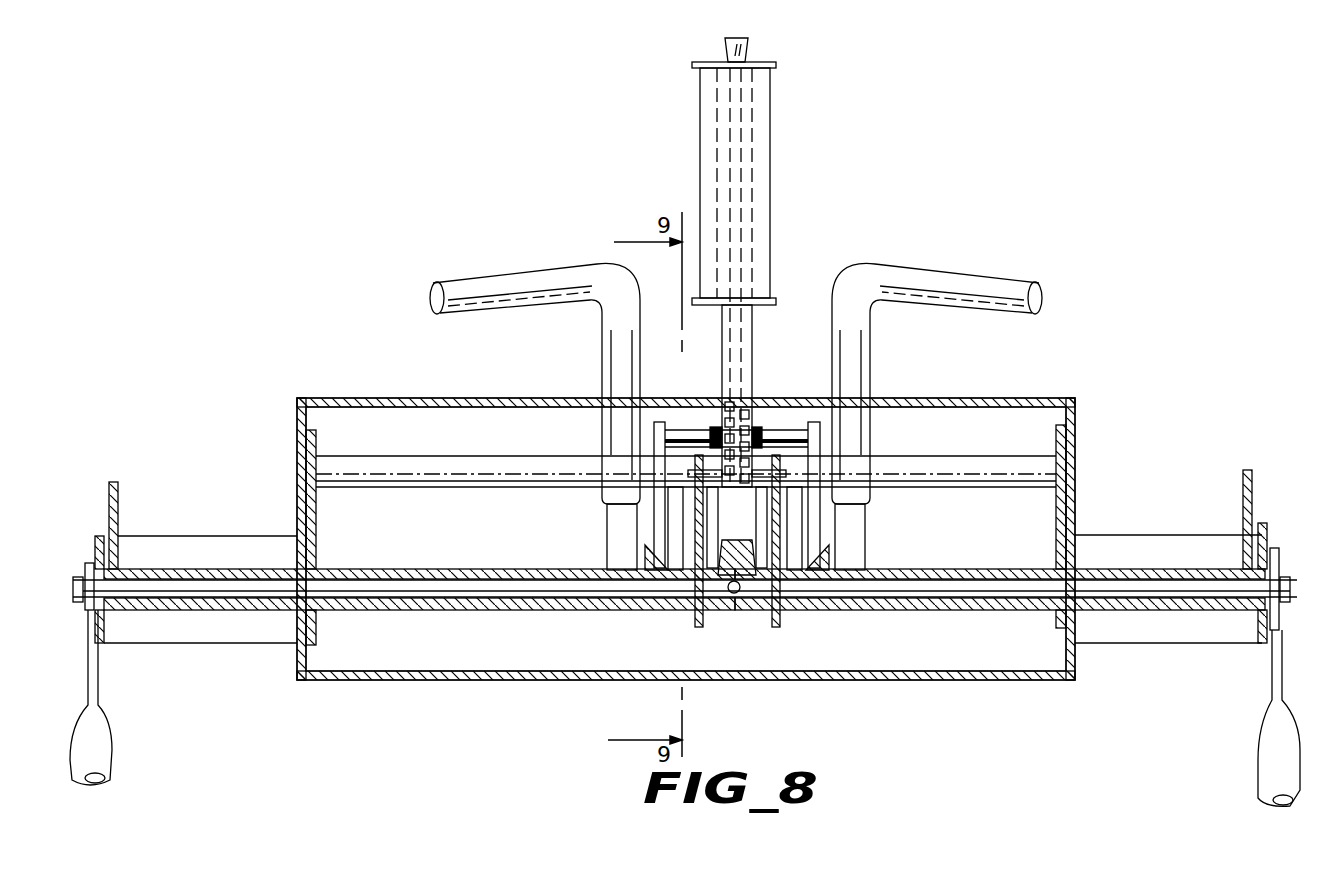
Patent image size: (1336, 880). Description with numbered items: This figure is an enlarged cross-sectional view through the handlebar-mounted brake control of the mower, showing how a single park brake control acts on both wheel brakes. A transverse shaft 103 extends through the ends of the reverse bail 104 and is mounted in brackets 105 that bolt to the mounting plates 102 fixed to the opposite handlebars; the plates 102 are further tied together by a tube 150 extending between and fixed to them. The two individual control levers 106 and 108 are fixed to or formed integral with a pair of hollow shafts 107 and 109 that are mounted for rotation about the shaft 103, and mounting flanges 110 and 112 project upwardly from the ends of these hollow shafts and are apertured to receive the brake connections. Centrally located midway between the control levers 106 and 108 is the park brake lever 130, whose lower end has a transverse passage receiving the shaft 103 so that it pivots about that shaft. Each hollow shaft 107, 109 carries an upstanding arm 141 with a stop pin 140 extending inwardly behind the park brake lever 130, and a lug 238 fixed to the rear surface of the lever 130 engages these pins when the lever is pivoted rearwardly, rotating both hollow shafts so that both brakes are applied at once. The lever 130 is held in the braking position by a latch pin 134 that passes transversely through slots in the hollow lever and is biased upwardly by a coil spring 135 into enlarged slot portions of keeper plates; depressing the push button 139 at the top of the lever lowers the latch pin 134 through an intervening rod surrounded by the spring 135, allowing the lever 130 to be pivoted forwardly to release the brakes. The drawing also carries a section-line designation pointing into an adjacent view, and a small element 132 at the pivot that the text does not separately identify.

The mounting plate 102 is at (1056, 626).
The shaft 103 is at (468, 598).
The reverse bail 104 is at (1270, 760).
The bracket 105 is at (1218, 645).
The control lever 106 is at (515, 270).
The hollow shaft 107 is at (455, 568).
The control lever 108 is at (965, 272).
The hollow shaft 109 is at (930, 567).
The mounting flange 110 is at (118, 483).
The mounting flange 112 is at (1247, 470).
The park brake lever 130 is at (772, 150).
The pin 132 is at (735, 596).
The latch pin 134 is at (838, 498).
The coil spring 135 is at (740, 400).
The push button 139 is at (750, 48).
The stop pin 140 is at (683, 428).
The upstanding arm 141 is at (812, 437).
The tube 150 is at (490, 458).
The lug 238 is at (760, 425).